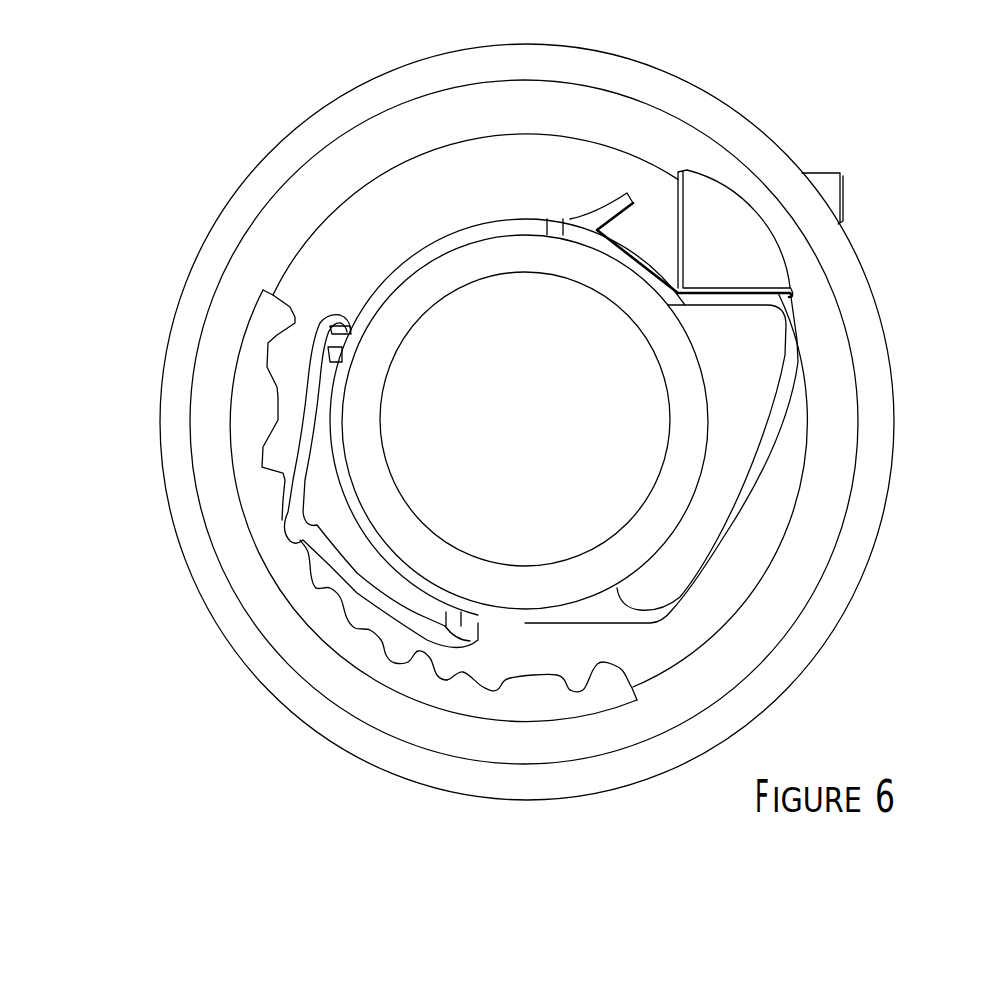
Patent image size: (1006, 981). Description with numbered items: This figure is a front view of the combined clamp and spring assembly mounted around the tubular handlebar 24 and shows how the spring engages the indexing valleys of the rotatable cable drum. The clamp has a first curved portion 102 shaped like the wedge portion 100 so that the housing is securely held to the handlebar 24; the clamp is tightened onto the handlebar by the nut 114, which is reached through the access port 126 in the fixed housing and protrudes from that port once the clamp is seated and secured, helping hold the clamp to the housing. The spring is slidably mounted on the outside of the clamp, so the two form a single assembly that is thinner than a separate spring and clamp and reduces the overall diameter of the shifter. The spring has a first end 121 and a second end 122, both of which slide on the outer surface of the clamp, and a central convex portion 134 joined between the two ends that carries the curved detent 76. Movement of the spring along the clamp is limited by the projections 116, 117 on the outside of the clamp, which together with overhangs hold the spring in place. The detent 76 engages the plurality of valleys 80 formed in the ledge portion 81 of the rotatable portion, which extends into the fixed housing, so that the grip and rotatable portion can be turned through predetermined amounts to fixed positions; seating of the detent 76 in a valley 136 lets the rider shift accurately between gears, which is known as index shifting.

The handlebar 24 is at (532, 600).
The detent 76 is at (283, 512).
The valleys 80 is at (497, 690).
The ledge portion 81 is at (620, 690).
The wedge portion 100 is at (760, 372).
The first curved portion 102 is at (780, 385).
The nut 114 is at (748, 243).
The projection 116 is at (447, 632).
The projection 117 is at (316, 366).
The first end 121 is at (338, 318).
The second end 122 is at (473, 640).
The access port 126 is at (770, 280).
The central convex portion 134 is at (345, 562).
The valley 136 is at (280, 537).